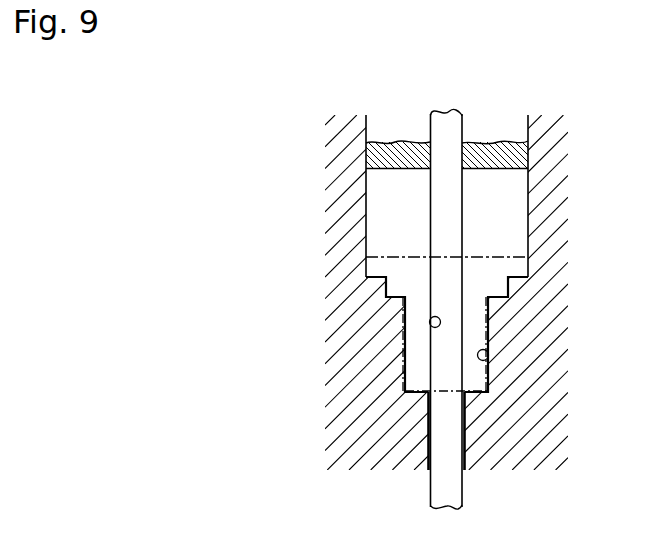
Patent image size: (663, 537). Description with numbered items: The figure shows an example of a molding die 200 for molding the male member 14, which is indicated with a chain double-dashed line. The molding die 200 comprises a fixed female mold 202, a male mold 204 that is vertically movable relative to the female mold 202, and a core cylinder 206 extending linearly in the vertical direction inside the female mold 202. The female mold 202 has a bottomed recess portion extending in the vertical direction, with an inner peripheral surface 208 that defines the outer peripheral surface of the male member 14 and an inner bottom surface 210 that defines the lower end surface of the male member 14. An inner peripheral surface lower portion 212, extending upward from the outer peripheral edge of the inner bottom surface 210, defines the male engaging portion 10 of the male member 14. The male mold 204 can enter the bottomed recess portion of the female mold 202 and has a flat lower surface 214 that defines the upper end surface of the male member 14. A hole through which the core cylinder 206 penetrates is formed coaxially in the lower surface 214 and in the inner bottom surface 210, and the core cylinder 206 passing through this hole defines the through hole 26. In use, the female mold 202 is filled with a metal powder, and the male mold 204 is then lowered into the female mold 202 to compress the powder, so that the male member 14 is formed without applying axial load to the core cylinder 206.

The molding die 200 is at (462, 62).
The female mold 202 is at (341, 99).
The male mold 204 is at (497, 140).
The core cylinder 206 is at (457, 215).
The inner peripheral surface 208 is at (367, 128).
The inner bottom surface 210 is at (470, 392).
The inner peripheral surface lower portion 212 is at (489, 352).
The lower surface 214 is at (507, 165).
The male member 14 is at (406, 255).
The through hole 26 is at (435, 333).
The male engaging portion 10 is at (404, 368).